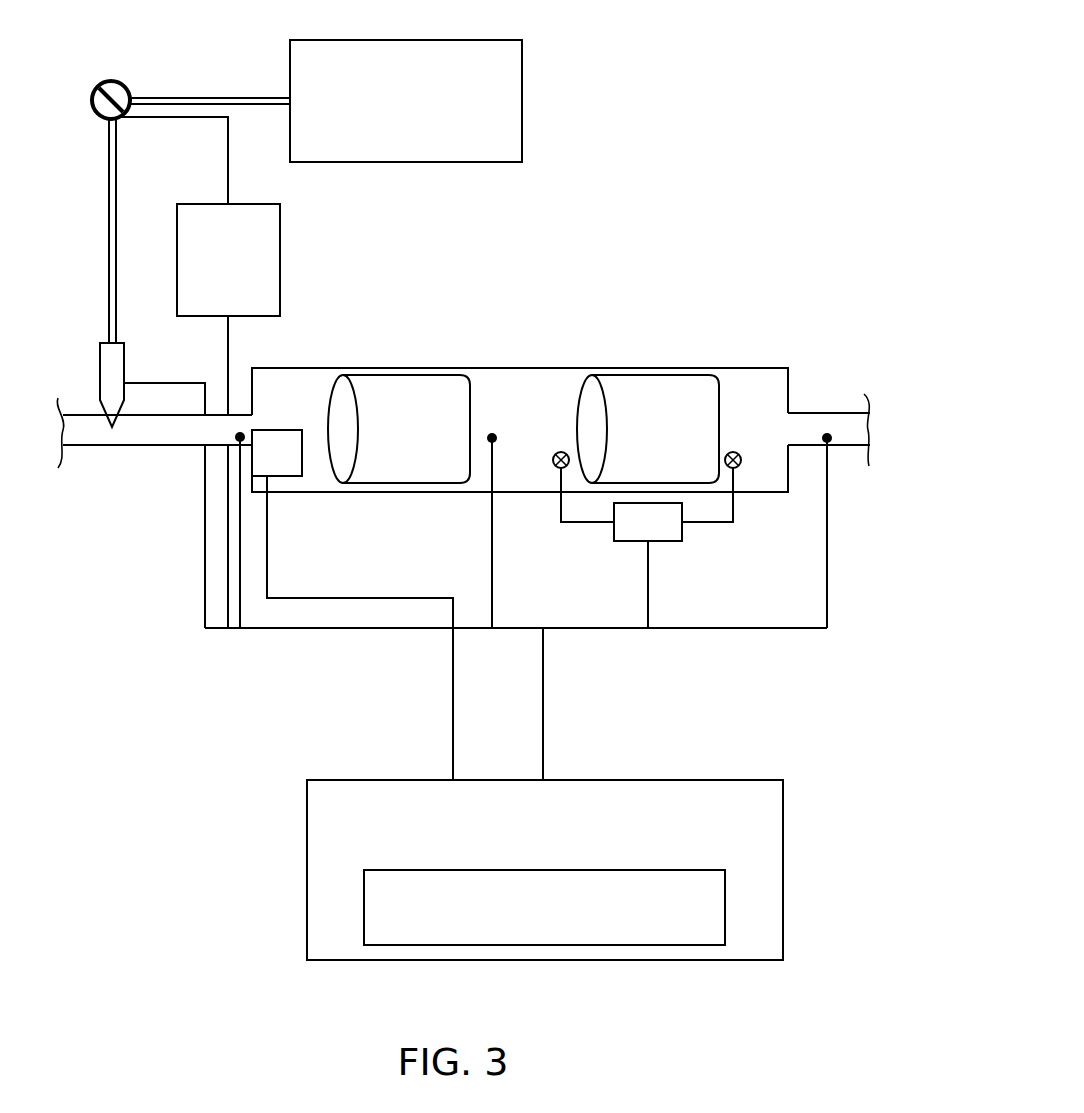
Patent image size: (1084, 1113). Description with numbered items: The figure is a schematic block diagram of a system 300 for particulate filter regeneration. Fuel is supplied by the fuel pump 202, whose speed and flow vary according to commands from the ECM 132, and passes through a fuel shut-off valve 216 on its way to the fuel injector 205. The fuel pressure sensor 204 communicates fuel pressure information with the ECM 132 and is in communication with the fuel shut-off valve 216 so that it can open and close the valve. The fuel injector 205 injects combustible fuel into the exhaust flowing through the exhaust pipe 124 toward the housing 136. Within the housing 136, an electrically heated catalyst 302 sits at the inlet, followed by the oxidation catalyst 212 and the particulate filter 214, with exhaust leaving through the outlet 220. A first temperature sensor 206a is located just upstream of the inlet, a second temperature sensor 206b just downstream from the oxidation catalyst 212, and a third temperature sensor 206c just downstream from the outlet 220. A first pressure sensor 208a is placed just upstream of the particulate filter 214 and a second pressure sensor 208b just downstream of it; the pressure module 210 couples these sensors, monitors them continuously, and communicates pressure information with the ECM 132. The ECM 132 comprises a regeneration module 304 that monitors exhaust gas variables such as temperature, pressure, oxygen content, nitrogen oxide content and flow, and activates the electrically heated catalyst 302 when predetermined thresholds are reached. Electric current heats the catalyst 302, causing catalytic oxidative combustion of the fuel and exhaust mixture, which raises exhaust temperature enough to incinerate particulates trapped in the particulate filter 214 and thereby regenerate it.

The system for particulate filter regeneration 300 is at (705, 71).
The fuel shut-off valve 216 is at (126, 84).
The fuel pump 202 is at (388, 131).
The fuel pressure sensor 204 is at (210, 307).
The fuel injector 205 is at (125, 373).
The exhaust pipe 124 is at (121, 447).
The unitary housing 136 is at (522, 368).
The electrically heated catalyst 302 is at (260, 464).
The first temperature sensor 206a is at (243, 435).
The oxidation catalyst 212 is at (398, 440).
The second temperature sensor 206b is at (492, 432).
The particulate filter 214 is at (643, 440).
The first pressure sensor 208a is at (561, 451).
The second pressure sensor 208b is at (733, 451).
The pressure module 210 is at (631, 533).
The outlet 220 is at (796, 430).
The third temperature sensor 206c is at (832, 450).
The ECM 132 is at (527, 847).
The regeneration module 304 is at (527, 932).